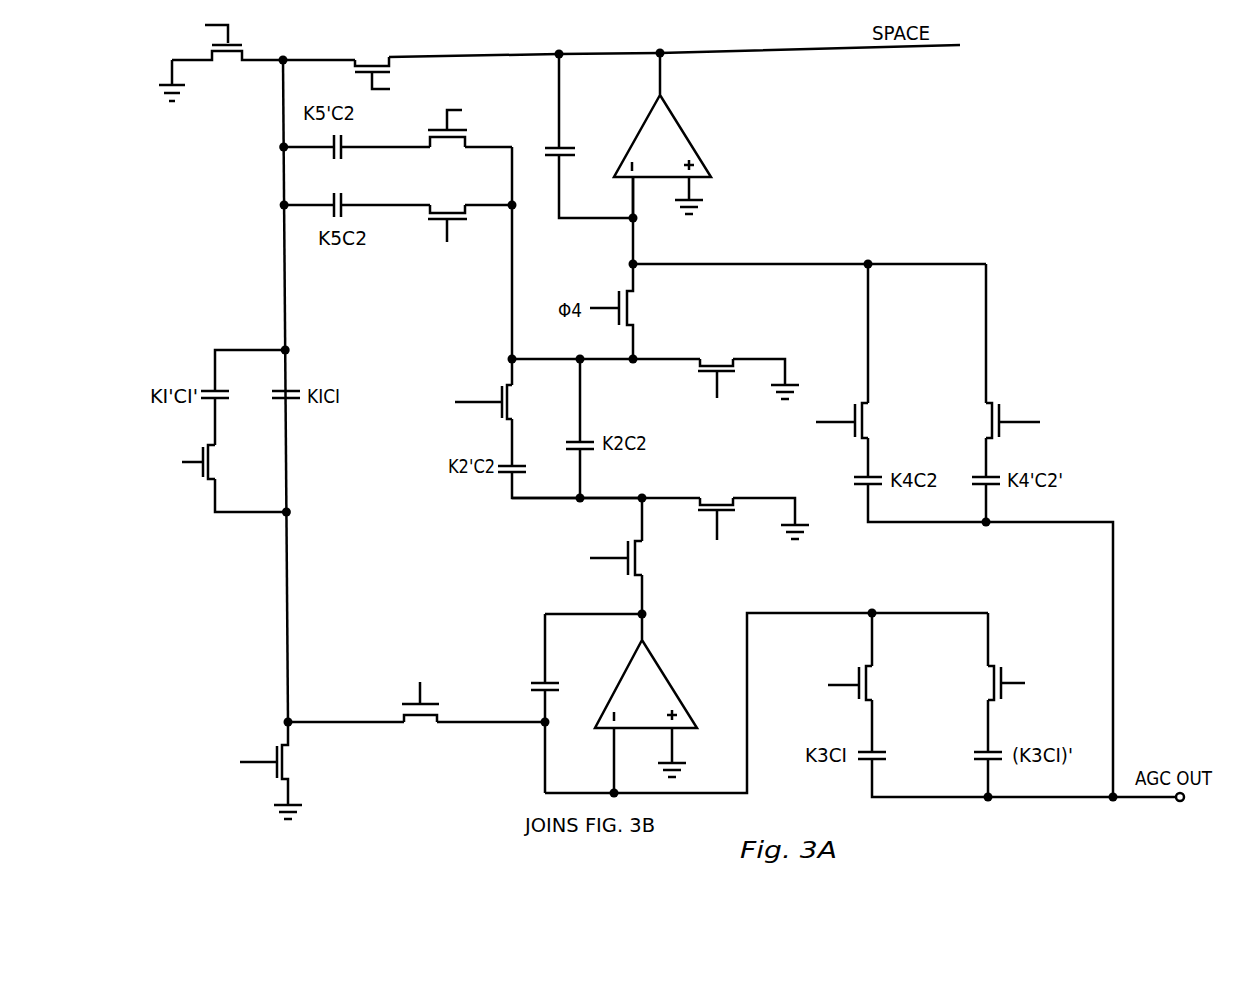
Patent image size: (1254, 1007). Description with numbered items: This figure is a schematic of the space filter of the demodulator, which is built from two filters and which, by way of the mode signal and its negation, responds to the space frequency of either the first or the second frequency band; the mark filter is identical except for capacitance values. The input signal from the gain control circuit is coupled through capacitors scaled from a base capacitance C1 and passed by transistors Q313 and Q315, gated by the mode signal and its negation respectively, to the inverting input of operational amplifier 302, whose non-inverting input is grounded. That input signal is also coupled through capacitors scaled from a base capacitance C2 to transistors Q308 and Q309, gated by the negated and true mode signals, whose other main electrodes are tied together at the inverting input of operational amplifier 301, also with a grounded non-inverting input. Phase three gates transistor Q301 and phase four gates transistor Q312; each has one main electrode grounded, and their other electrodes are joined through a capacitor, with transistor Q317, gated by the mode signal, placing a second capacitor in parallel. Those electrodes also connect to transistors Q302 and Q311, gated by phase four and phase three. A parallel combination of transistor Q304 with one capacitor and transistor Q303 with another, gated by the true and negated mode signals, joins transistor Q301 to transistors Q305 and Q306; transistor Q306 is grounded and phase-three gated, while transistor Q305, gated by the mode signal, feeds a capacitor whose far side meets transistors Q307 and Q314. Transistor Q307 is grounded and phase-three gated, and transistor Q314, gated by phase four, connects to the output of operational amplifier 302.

The operational amplifier 301 is at (684, 133).
The operational amplifier 302 is at (657, 673).
The transistor Q301 is at (221, 58).
The transistor Q302 is at (384, 65).
The transistor Q303 is at (482, 135).
The transistor Q304 is at (459, 219).
The transistor Q305 is at (482, 402).
The transistor Q306 is at (715, 378).
The transistor Q307 is at (725, 523).
The transistor Q308 is at (826, 420).
The transistor Q309 is at (1027, 420).
The transistor Q311 is at (421, 702).
The transistor Q312 is at (272, 770).
The transistor Q313 is at (839, 683).
The transistor Q314 is at (623, 558).
The transistor Q315 is at (1018, 683).
The transistor Q317 is at (191, 462).
The capacitance value C1 is at (533, 703).
The capacitance value C2 is at (589, 136).